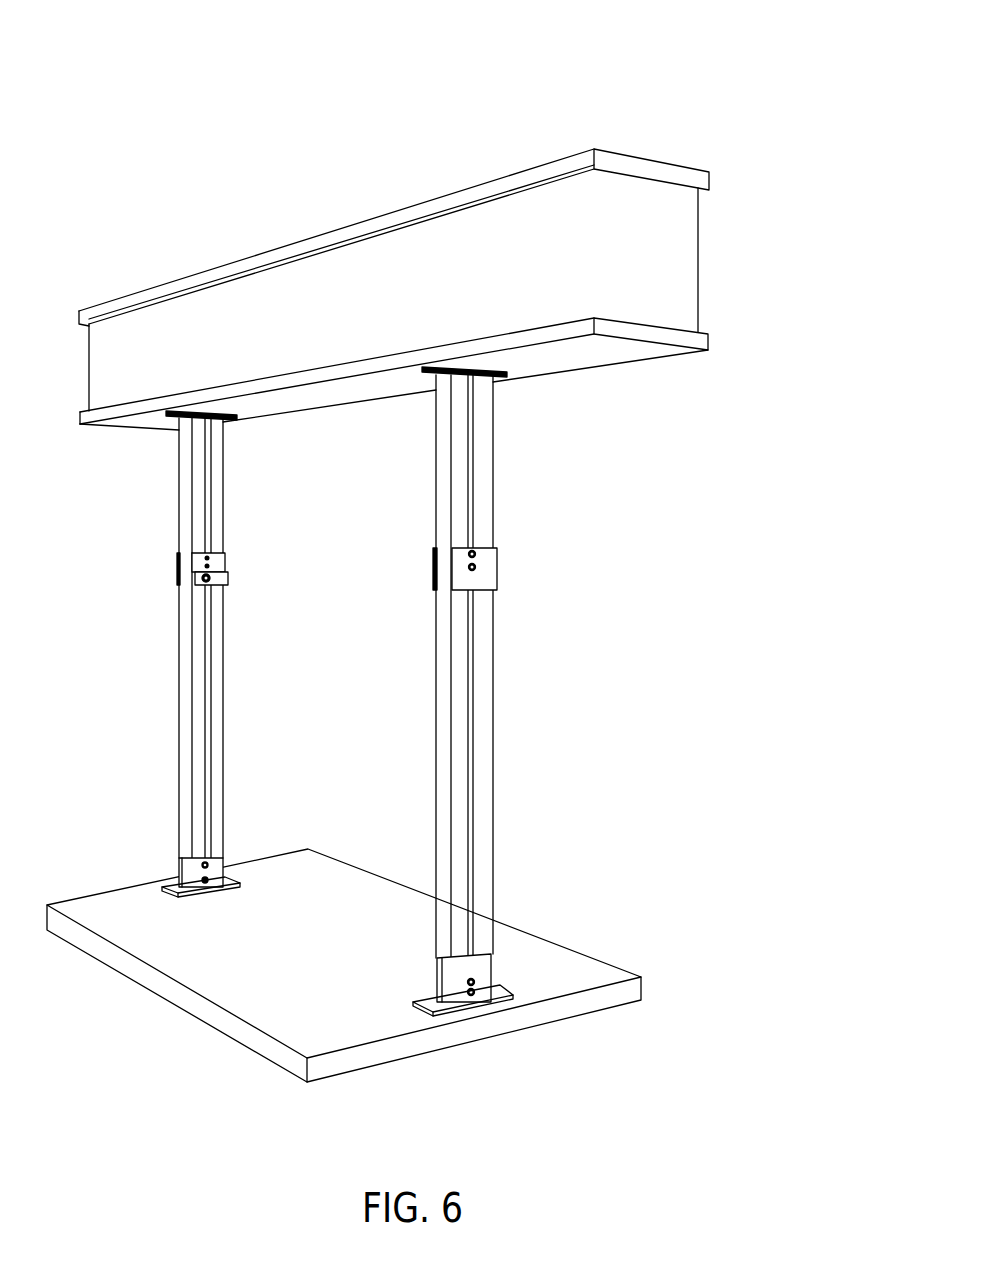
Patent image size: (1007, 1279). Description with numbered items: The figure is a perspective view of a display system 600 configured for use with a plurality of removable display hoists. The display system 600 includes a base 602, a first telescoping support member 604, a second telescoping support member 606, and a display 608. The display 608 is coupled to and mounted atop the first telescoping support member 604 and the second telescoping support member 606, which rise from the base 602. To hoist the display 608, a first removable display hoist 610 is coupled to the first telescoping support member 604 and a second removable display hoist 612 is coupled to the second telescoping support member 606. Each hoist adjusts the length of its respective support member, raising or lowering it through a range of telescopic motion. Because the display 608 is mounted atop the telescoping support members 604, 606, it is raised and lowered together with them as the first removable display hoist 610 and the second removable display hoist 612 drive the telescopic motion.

The display system 600 is at (741, 54).
The base 602 is at (594, 958).
The first telescoping support member 604 is at (488, 470).
The second telescoping support member 606 is at (225, 500).
The display 608 is at (678, 170).
The first removable display hoist 610 is at (488, 567).
The second removable display hoist 612 is at (226, 636).